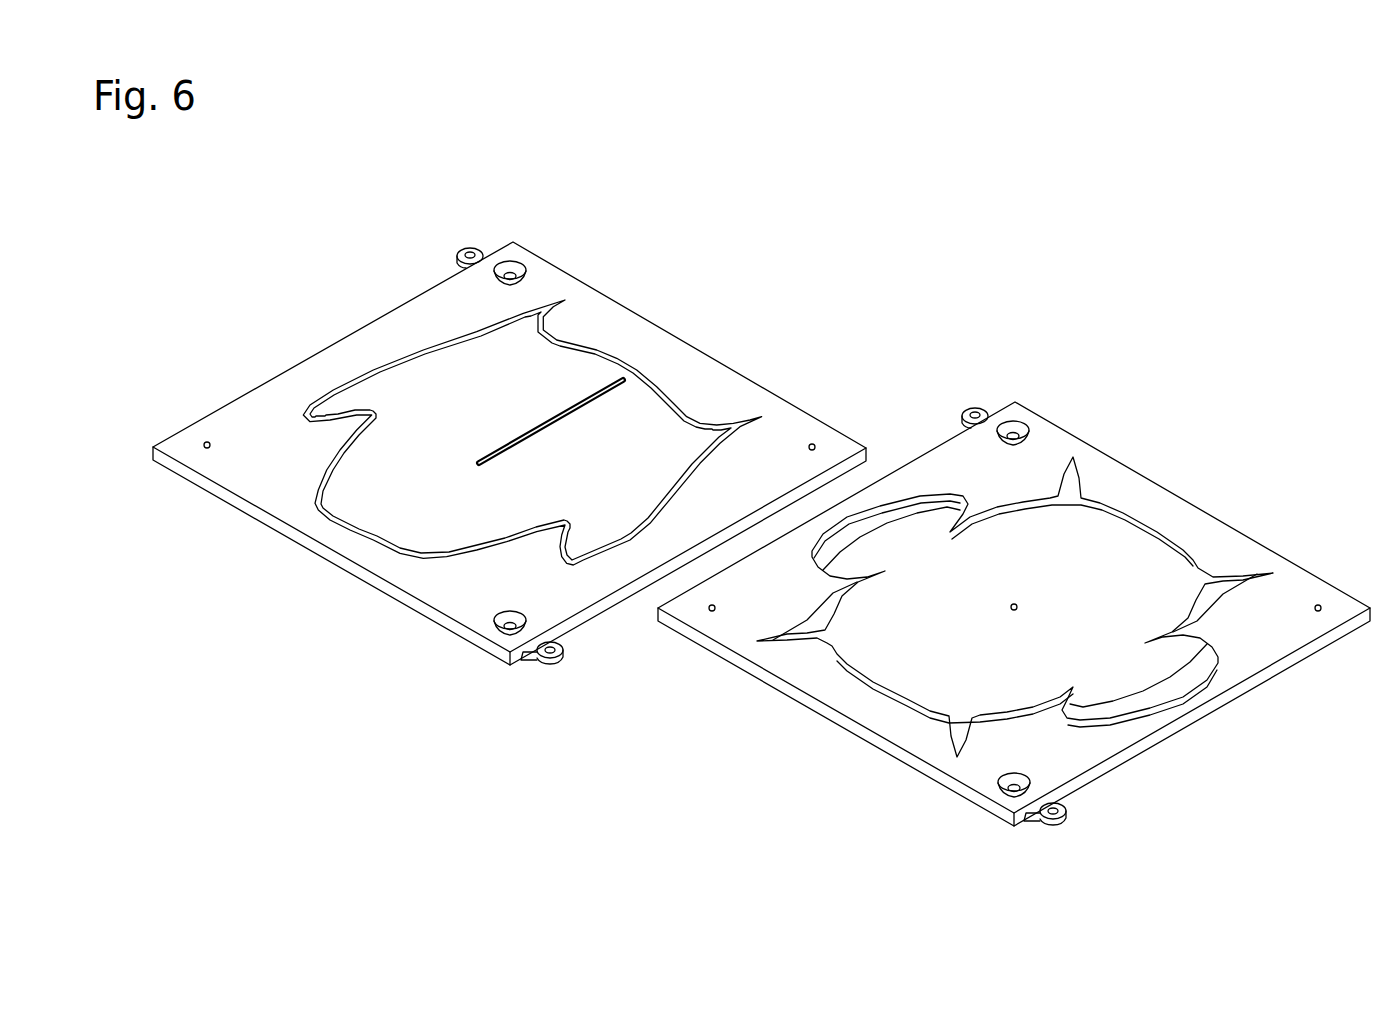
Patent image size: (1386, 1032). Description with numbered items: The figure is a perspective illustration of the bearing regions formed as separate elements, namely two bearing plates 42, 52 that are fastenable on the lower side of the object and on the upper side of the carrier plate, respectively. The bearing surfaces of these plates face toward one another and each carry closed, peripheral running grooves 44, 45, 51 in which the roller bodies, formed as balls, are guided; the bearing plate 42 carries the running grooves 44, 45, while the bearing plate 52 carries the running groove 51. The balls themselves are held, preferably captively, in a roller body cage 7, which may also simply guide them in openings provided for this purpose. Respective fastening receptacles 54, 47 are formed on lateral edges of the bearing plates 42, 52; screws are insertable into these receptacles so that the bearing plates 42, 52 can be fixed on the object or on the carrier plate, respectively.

The roller body cage 7 is at (608, 378).
The bearing plate 42 is at (1014, 596).
The running groove 44 is at (1017, 606).
The running groove 45 is at (1175, 530).
The fastening receptacle 47 is at (977, 412).
The running groove 51 is at (578, 345).
The bearing plate 52 is at (509, 447).
The fastening receptacle 54 is at (467, 250).